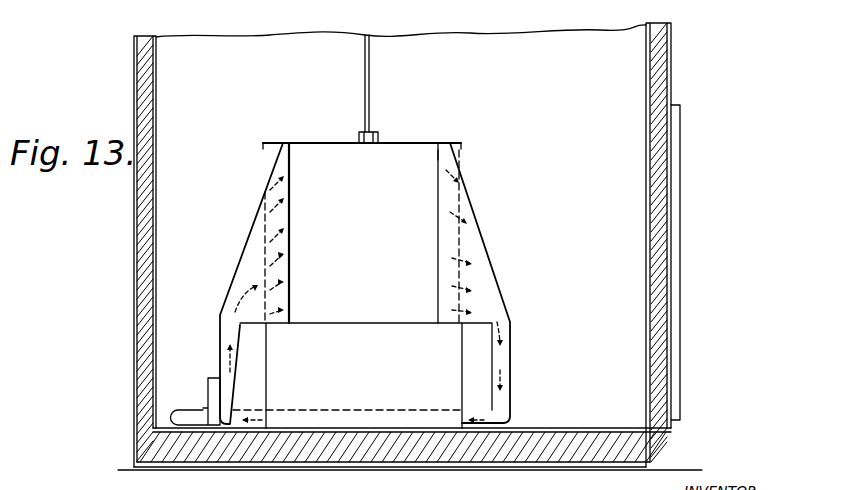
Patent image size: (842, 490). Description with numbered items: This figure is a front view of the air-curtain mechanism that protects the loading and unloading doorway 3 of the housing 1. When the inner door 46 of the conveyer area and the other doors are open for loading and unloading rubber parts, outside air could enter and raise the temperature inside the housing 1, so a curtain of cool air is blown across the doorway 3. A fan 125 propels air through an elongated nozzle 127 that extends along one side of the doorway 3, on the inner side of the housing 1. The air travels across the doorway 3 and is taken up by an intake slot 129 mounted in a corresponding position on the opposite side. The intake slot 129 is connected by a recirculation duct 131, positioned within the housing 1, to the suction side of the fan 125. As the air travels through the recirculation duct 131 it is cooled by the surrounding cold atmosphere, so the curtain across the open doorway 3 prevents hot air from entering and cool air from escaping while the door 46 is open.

The housing 1 is at (671, 81).
The loading and unloading doorway 3 is at (319, 166).
The door 46 is at (404, 160).
The fan 125 is at (213, 378).
The elongated nozzle 127 is at (255, 242).
The intake slot 129 is at (487, 273).
The recirculation duct 131 is at (330, 421).